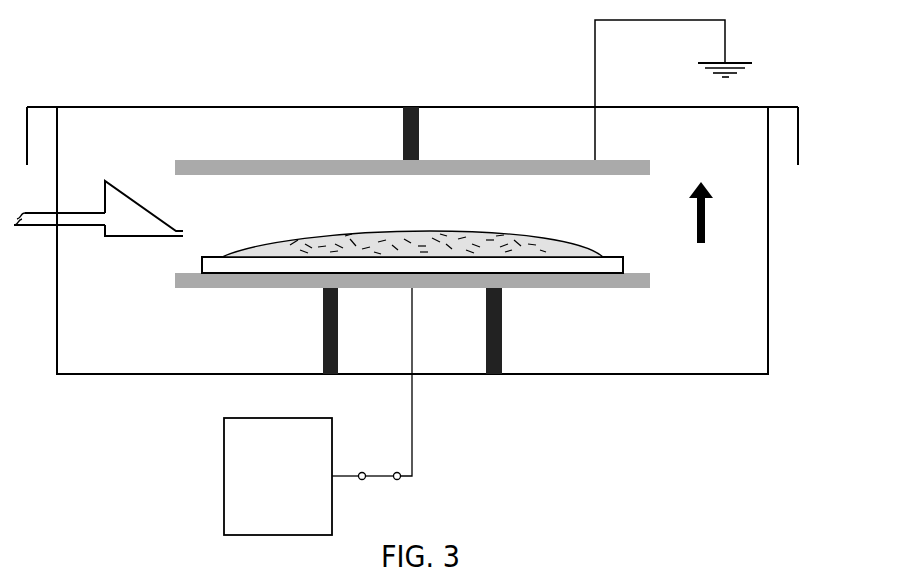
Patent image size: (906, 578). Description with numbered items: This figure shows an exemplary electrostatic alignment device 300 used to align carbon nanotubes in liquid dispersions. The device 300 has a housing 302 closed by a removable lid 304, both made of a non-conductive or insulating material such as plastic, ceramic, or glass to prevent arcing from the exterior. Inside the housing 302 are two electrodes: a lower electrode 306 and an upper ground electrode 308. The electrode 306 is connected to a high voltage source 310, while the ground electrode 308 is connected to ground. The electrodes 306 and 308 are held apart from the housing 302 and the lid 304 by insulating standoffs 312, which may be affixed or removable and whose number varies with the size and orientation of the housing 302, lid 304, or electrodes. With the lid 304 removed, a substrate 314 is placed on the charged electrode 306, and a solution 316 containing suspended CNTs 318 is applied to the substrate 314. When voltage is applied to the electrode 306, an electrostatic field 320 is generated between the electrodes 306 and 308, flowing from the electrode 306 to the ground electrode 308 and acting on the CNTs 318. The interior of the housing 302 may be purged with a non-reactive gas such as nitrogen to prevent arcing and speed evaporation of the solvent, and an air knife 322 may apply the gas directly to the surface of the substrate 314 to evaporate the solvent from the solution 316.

The electrostatic alignment device 300 is at (127, 57).
The housing 302 is at (412, 261).
The removable lid 304 is at (412, 121).
The electrode 306 is at (449, 297).
The ground electrode 308 is at (386, 150).
The high voltage source 310 is at (298, 411).
The standoffs 312 is at (414, 240).
The substrate 314 is at (438, 251).
The solution 316 is at (406, 222).
The suspended CNTs 318 is at (418, 223).
The electrostatic field 320 is at (752, 250).
The air knife 322 is at (98, 233).